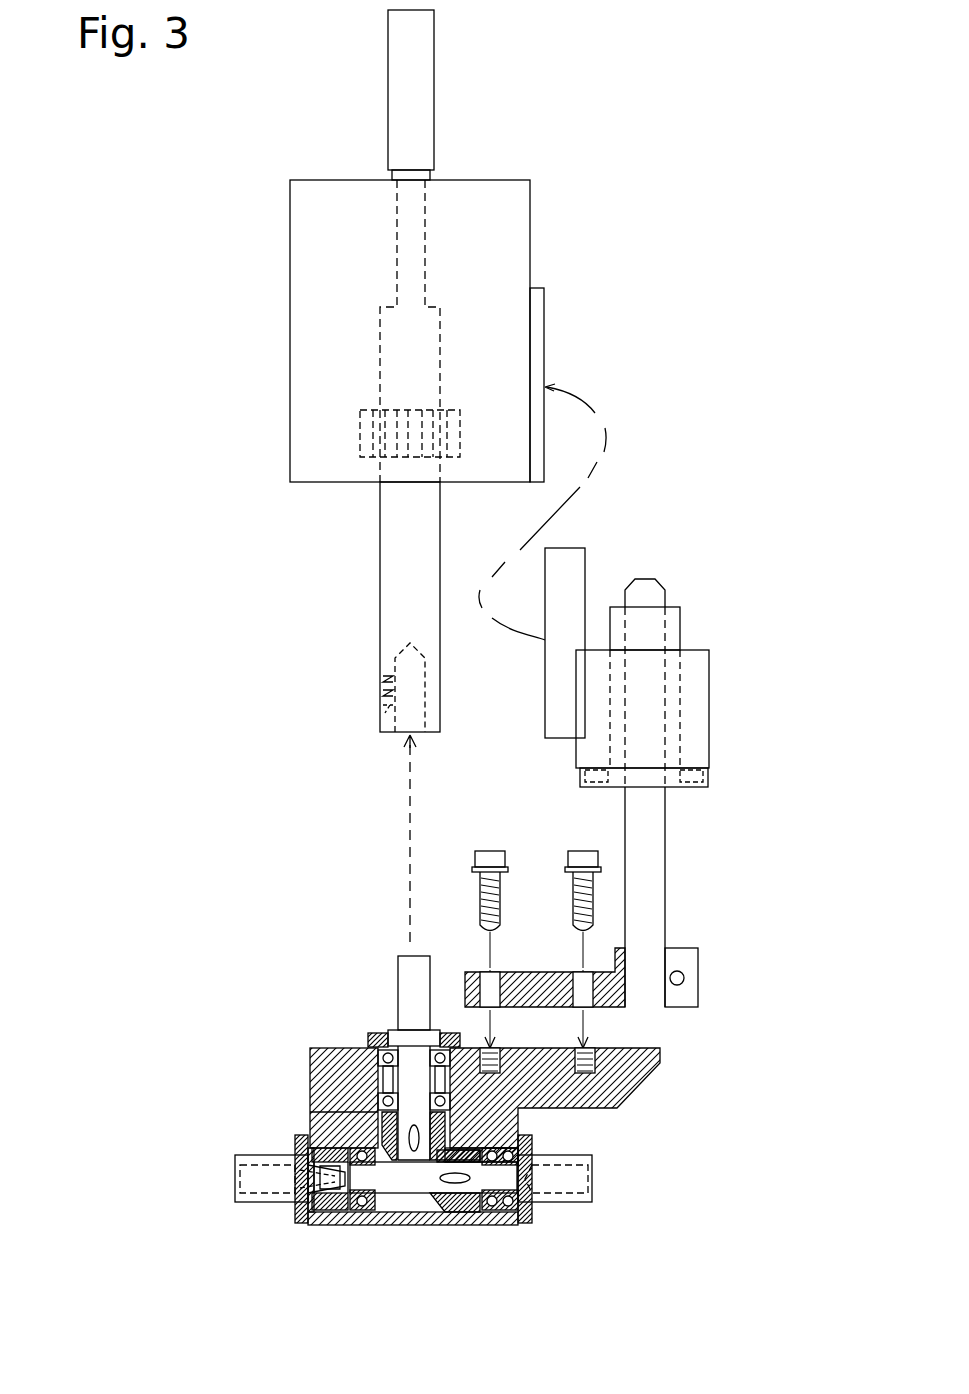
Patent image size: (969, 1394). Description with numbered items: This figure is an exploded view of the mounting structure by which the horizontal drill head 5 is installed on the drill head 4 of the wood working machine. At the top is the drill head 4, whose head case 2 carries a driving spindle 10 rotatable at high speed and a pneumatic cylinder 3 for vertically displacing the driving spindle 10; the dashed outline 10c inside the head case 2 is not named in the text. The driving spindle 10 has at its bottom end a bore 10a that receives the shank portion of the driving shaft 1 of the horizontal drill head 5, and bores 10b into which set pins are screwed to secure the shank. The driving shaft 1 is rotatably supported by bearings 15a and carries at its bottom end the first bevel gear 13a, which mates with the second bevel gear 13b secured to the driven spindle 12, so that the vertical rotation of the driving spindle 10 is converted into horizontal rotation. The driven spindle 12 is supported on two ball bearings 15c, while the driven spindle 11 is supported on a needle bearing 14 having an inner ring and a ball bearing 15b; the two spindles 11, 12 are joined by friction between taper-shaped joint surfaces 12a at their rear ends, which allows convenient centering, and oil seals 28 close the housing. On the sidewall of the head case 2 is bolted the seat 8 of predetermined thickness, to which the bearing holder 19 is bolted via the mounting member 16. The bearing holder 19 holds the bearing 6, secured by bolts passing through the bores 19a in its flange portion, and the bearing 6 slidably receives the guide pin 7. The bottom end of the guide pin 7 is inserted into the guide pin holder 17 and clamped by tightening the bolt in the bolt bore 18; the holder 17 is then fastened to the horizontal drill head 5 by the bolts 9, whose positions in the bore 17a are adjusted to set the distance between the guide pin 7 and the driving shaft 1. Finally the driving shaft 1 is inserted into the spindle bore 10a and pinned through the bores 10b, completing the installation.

The driving shaft 1 is at (412, 983).
The head case 2 is at (518, 215).
The pneumatic cylinder 3 is at (418, 62).
The drill head 4 is at (290, 228).
The horizontal drill head 5 is at (308, 1062).
The bearing 6 is at (670, 631).
The guide pin 7 is at (650, 878).
The seat 8 is at (537, 292).
The bolts 9 is at (554, 898).
The driving spindle 10 is at (400, 548).
The bore 10a is at (392, 716).
The bores 10b is at (380, 683).
The motor stator 10c is at (362, 415).
The driven spindle 11 is at (280, 1205).
The driven spindle 12 is at (575, 1205).
The taper-shaped joint surfaces 12a is at (350, 1235).
The first bevel gear 13a is at (388, 1136).
The second bevel gear 13b is at (452, 1205).
The needle bearing 14 is at (337, 1212).
The bearings 15a is at (385, 1105).
The ball bearing 15b is at (374, 1222).
The ball bearings 15c is at (495, 1222).
The mounting member 16 is at (573, 582).
The guide pin holder 17 is at (591, 964).
The bore 17a is at (583, 985).
The bolt bore 18 is at (684, 981).
The bearing holder 19 is at (693, 670).
The bores 19a is at (708, 808).
The oil seals 28 is at (380, 1037).